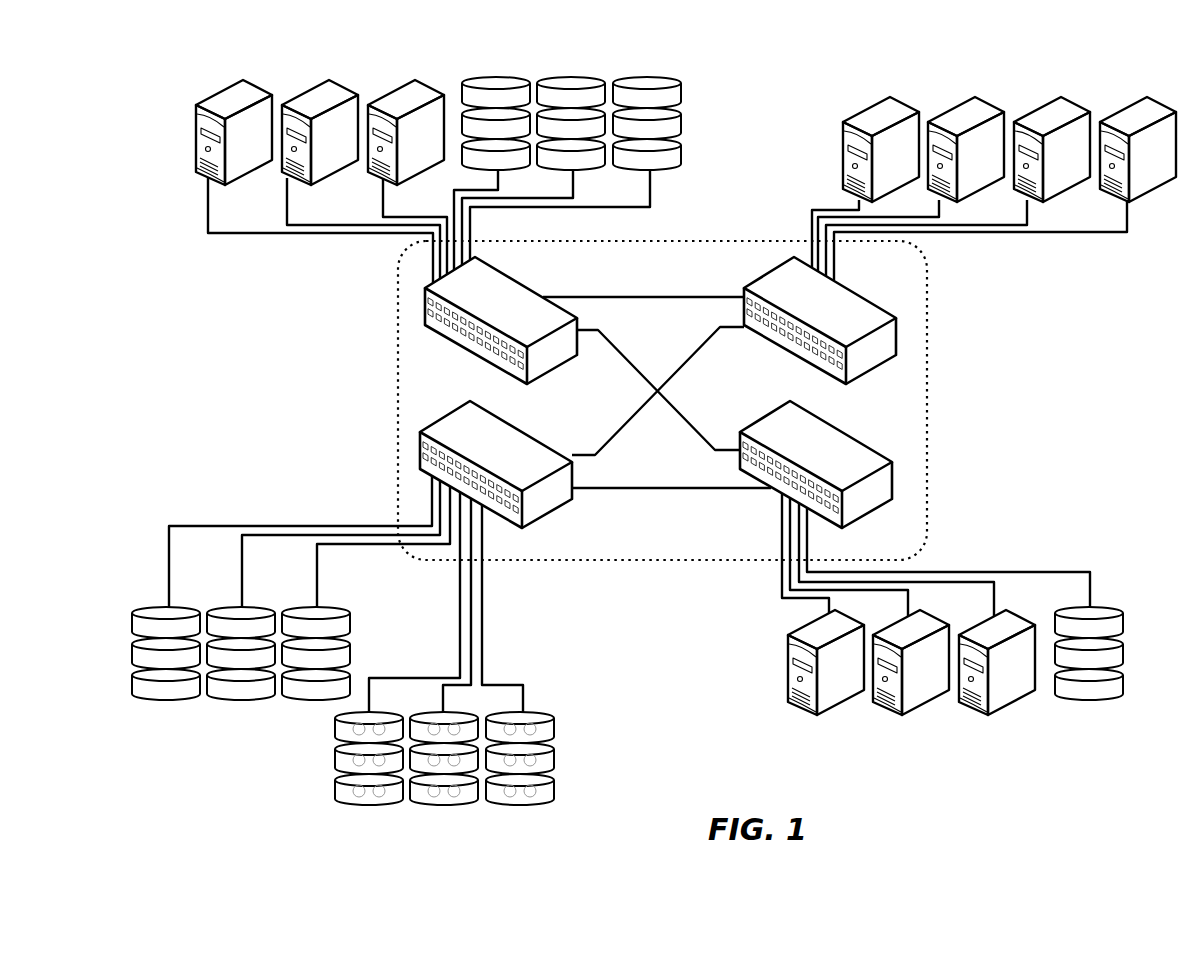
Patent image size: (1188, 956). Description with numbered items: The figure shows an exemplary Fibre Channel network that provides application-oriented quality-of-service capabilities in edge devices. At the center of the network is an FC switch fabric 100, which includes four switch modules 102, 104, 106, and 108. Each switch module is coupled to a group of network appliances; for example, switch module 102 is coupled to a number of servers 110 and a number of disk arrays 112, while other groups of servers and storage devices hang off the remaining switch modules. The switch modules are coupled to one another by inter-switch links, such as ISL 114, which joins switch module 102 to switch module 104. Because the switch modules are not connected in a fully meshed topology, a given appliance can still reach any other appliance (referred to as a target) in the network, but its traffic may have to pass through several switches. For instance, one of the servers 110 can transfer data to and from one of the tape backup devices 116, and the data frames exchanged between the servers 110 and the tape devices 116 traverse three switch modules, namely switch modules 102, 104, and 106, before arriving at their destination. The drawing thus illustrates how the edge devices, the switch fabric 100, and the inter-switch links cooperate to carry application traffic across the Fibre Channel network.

The FC switch fabric 100 is at (662, 400).
The switch module 102 is at (501, 320).
The switch module 104 is at (820, 320).
The switch module 106 is at (496, 464).
The switch module 108 is at (816, 464).
The servers 110 is at (440, 77).
The disk arrays 112 is at (457, 80).
The inter-switch link 114 is at (623, 297).
The tape backup devices 116 is at (562, 796).